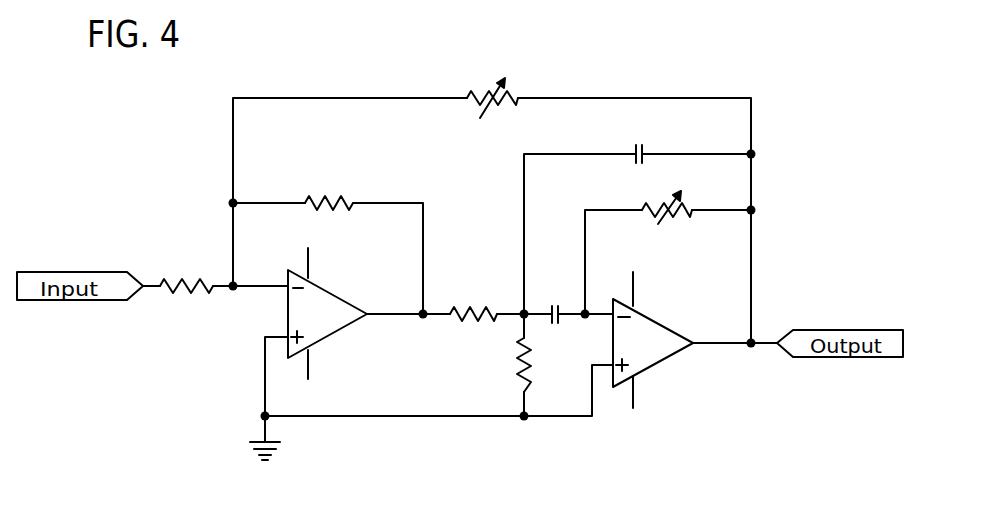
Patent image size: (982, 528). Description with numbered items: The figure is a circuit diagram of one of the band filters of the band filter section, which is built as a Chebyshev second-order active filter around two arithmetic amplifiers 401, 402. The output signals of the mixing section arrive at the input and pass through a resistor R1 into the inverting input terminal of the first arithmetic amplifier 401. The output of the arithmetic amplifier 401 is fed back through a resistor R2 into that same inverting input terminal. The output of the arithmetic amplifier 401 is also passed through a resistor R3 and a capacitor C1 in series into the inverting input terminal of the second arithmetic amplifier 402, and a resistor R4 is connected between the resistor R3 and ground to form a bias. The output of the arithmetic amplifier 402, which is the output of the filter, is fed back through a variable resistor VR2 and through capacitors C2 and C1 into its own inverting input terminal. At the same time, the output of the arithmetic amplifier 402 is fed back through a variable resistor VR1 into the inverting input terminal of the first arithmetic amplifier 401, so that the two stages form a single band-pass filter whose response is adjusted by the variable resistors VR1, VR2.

The arithmetic amplifier 401 is at (333, 337).
The arithmetic amplifier 402 is at (655, 365).
The resistor R1 is at (186, 276).
The resistor R2 is at (329, 192).
The resistor R3 is at (473, 304).
The resistor R4 is at (538, 365).
The capacitor C1 is at (554, 305).
The capacitor C2 is at (639, 145).
The variable resistor VR1 is at (492, 88).
The variable resistor VR2 is at (667, 198).